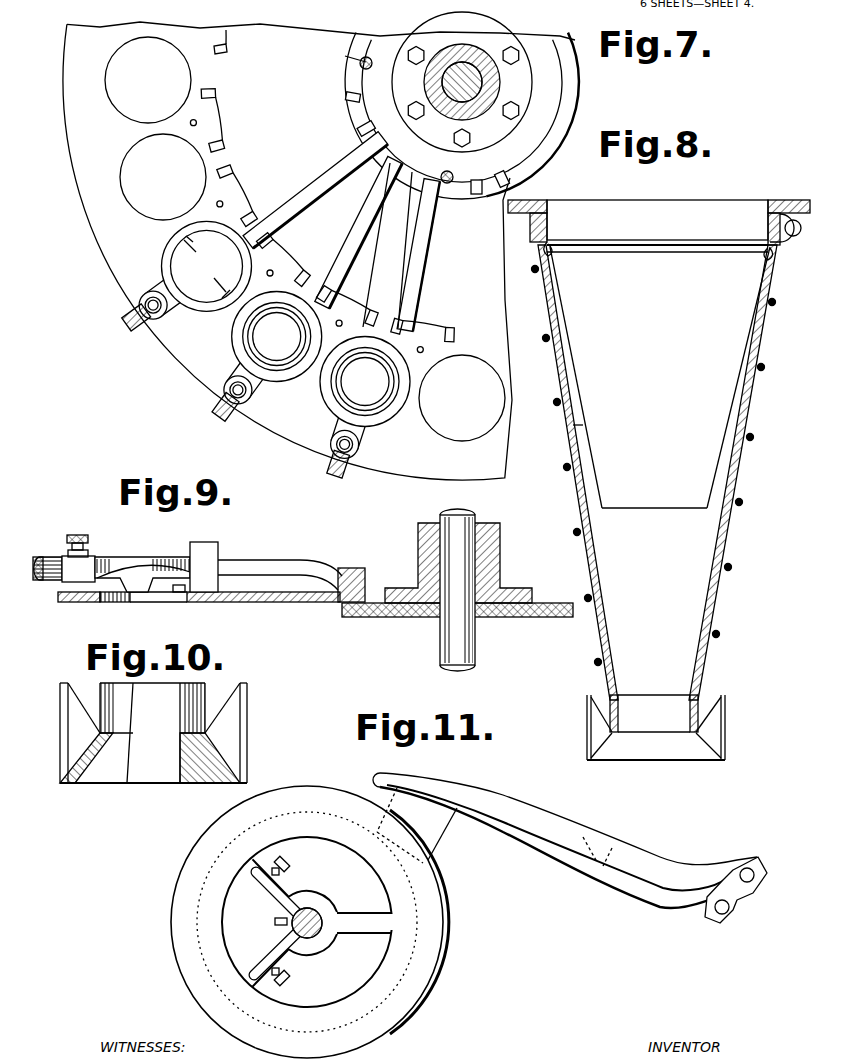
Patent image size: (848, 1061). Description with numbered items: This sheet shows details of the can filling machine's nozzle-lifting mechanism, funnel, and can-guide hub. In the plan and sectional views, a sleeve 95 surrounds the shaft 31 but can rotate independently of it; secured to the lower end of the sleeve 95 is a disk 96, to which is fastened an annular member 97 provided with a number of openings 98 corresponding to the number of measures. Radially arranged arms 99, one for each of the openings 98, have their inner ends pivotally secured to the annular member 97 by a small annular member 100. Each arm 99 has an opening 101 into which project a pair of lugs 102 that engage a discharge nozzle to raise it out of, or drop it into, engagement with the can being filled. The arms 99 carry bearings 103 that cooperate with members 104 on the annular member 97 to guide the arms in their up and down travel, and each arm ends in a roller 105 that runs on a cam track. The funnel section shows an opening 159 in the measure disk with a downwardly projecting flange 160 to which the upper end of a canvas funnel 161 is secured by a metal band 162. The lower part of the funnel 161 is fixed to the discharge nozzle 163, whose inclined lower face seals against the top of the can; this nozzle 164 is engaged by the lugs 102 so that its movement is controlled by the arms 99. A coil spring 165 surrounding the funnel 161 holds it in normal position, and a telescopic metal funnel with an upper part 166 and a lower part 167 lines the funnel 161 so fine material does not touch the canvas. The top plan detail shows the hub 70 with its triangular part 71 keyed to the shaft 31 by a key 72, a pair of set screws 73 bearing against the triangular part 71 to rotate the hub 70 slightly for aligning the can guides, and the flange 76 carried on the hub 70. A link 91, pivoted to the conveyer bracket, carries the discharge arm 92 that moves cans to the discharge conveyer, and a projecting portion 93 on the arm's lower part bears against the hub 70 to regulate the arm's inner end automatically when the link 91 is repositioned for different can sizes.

In FIG. 7, the shaft 31 is at (500, 72).
In FIG. 9, the shaft 31 is at (446, 632).
In FIG. 11, the shaft 31 is at (322, 912).
In FIG. 11, the hub 70 is at (416, 926).
In FIG. 11, the triangular part 71 is at (272, 902).
In FIG. 11, the key 72 is at (283, 922).
In FIG. 11, the set screws 73 is at (286, 864).
In FIG. 11, the flange 76 is at (441, 946).
In FIG. 11, the link 91 is at (745, 904).
In FIG. 11, the discharge arm 92 is at (598, 838).
In FIG. 11, the projecting portion 93 is at (437, 840).
In FIG. 7, the sleeve 95 is at (500, 92).
In FIG. 9, the sleeve 95 is at (500, 555).
In FIG. 7, the disk 96 is at (462, 105).
In FIG. 9, the disk 96 is at (410, 617).
In FIG. 7, the annular member 97 is at (319, 251).
In FIG. 9, the annular member 97 is at (336, 602).
In FIG. 7, the openings 98 is at (133, 103).
In FIG. 9, the openings 98 is at (168, 596).
In FIG. 7, the arms 99 is at (358, 230).
In FIG. 9, the arms 99 is at (268, 566).
In FIG. 9, the small annular member 100 is at (358, 568).
In FIG. 7, the opening 101 is at (201, 296).
In FIG. 7, the lugs 102 is at (286, 323).
In FIG. 9, the lugs 102 is at (130, 592).
In FIG. 7, the bearings 103 is at (333, 295).
In FIG. 9, the bearings 103 is at (210, 546).
In FIG. 7, the members 104 is at (207, 120).
In FIG. 7, the roller 105 is at (355, 488).
In FIG. 9, the roller 105 is at (58, 556).
In FIG. 8, the openings 159 is at (703, 212).
In FIG. 8, the flange 160 is at (540, 242).
In FIG. 8, the funnel 161 is at (560, 386).
In FIG. 8, the metal band 162 is at (795, 240).
In FIG. 8, the discharge nozzle 163 is at (594, 700).
In FIG. 10, the discharge nozzle 163 is at (242, 712).
In FIG. 8, the nozzle 164 is at (610, 760).
In FIG. 10, the nozzle 164 is at (108, 778).
In FIG. 8, the coil spring 165 is at (742, 445).
In FIG. 8, the upper part 166 is at (742, 330).
In FIG. 8, the lower part 167 is at (736, 530).